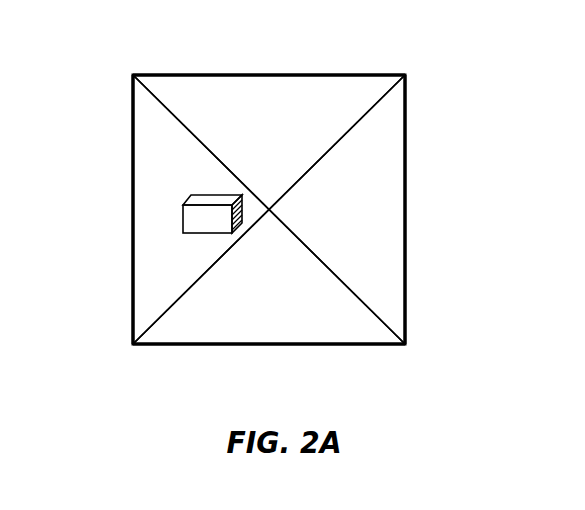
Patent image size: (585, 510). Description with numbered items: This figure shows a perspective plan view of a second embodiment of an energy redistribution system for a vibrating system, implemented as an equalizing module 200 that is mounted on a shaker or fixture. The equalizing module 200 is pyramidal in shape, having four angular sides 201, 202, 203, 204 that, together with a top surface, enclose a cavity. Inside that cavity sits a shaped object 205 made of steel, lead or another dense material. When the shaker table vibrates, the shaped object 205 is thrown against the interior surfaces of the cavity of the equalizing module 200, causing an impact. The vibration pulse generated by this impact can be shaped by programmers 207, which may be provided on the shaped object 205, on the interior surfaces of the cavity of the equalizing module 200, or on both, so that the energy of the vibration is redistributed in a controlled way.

The equalizing module 200 is at (480, 116).
The angular side 201 is at (150, 221).
The angular side 202 is at (271, 93).
The angular side 203 is at (378, 202).
The angular side 204 is at (283, 322).
The shaped object 205 is at (180, 193).
The programmers 207 is at (244, 201).